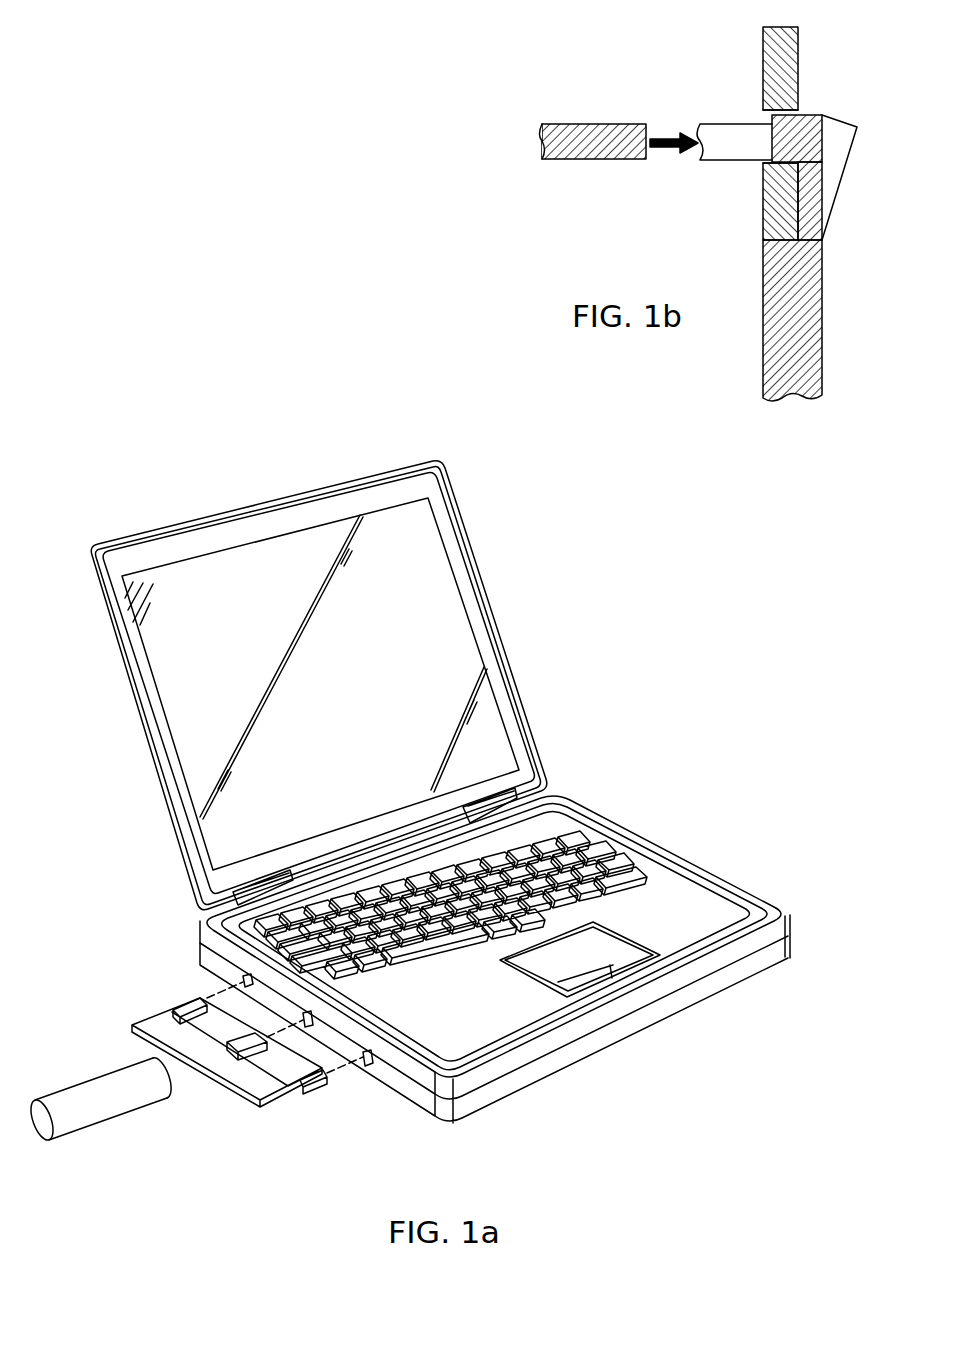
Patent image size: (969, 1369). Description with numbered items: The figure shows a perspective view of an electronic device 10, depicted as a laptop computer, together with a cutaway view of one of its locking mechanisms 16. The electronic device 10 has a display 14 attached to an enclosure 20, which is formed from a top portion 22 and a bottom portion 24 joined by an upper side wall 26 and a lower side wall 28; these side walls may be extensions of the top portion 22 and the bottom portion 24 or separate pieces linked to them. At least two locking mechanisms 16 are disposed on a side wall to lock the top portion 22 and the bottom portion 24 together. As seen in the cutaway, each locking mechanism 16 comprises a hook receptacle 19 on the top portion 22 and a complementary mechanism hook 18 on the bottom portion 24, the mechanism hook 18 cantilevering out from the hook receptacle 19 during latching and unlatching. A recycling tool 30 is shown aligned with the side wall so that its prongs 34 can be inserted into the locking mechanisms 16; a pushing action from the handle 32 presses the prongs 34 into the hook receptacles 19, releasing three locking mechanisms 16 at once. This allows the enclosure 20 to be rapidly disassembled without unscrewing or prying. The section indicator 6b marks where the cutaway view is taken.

In FIG. 1A, the electronic device 10 is at (739, 665).
In FIG. 1A, the display 14 is at (173, 686).
In FIG. 1B, the locking mechanism 16 is at (866, 216).
In FIG. 1A, the locking mechanism 16 is at (240, 981).
In FIG. 1B, the mechanism hook 18 is at (806, 120).
In FIG. 1B, the hook receptacle 19 is at (770, 115).
In FIG. 1A, the enclosure 20 is at (463, 522).
In FIG. 1A, the top portion 22 is at (237, 952).
In FIG. 1A, the bottom portion 24 is at (613, 1043).
In FIG. 1B, the upper side wall 26 is at (764, 58).
In FIG. 1A, the upper side wall 26 is at (400, 1070).
In FIG. 1B, the lower side wall 28 is at (770, 215).
In FIG. 1A, the lower side wall 28 is at (422, 1105).
In FIG. 1A, the recycling tool 30 is at (92, 1137).
In FIG. 1A, the handle 32 is at (102, 1087).
In FIG. 1B, the prongs 34 is at (598, 122).
In FIG. 1A, the prongs 34 is at (233, 1040).
In FIG. 1A, the section view indicator 6b is at (422, 1037).